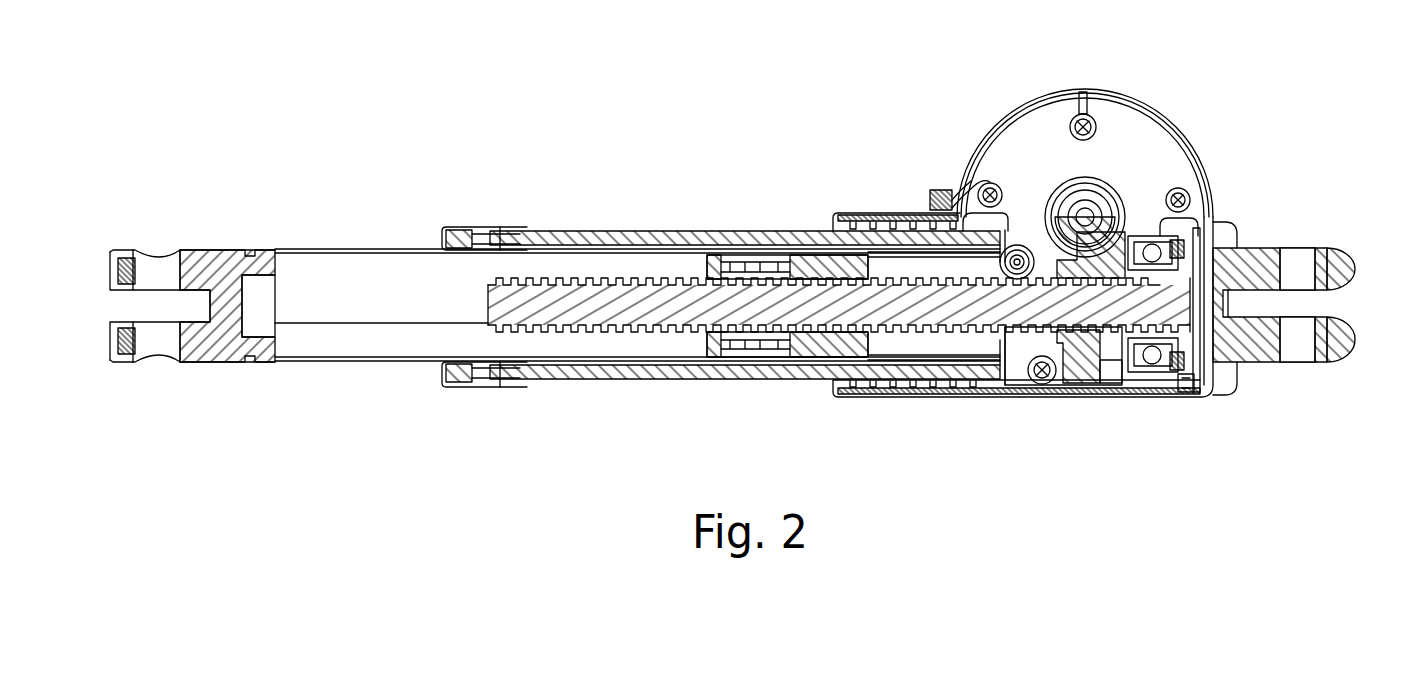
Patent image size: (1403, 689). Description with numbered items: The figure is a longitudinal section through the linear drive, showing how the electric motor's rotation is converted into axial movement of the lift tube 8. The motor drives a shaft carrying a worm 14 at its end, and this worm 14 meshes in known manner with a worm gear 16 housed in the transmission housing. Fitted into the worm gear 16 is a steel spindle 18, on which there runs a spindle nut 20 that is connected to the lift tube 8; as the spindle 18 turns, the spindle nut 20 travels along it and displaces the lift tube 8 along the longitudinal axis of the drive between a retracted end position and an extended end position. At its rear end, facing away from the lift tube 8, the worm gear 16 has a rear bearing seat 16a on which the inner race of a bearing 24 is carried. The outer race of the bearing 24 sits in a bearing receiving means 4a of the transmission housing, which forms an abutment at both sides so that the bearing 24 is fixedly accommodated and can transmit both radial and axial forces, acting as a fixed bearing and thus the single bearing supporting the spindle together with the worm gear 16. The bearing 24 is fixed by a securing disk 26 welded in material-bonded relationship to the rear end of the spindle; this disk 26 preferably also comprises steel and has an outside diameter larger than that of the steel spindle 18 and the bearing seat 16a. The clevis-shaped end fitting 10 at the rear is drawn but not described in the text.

The lift tube 8 is at (333, 363).
The clevis mounting eye 10 is at (1340, 258).
The worm 14 is at (462, 378).
The worm gear 16 is at (1080, 360).
The rear bearing seat 16a is at (1147, 372).
The steel spindle 18 is at (562, 305).
The spindle nut 20 is at (805, 362).
The bearing 24 is at (1188, 395).
The securing disk 26 is at (1215, 228).
The bearing receiving means 4a is at (1138, 235).